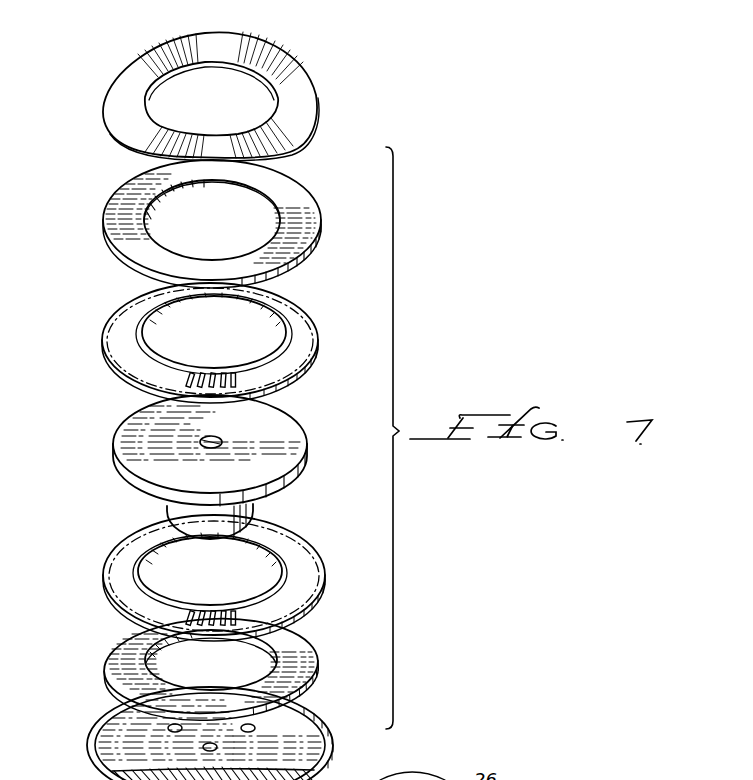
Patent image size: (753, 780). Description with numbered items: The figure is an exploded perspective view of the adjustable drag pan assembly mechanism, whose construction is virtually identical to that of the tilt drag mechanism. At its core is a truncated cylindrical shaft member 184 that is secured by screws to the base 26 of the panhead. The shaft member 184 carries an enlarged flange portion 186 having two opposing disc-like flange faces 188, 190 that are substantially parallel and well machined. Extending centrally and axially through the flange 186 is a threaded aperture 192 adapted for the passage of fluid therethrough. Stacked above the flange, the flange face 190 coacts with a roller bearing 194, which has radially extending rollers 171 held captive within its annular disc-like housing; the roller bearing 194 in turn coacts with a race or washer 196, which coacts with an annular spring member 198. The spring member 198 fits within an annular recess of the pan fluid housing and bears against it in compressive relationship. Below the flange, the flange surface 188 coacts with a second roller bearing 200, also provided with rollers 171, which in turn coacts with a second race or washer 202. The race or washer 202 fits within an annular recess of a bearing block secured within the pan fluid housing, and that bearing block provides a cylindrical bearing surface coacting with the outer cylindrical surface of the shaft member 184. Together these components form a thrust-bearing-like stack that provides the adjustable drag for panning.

The spring member 198 is at (303, 106).
The race or washer 196 is at (303, 205).
The roller bearing 194 is at (297, 322).
The rollers 171 is at (234, 372).
The threaded aperture 192 is at (216, 438).
The flange face 190 is at (235, 467).
The enlarged flange portion 186 is at (112, 459).
The flange face 188 is at (290, 492).
The shaft member 184 is at (124, 499).
The second roller bearing 200 is at (295, 573).
The second race or washer 202 is at (300, 653).
The base 26 is at (132, 730).